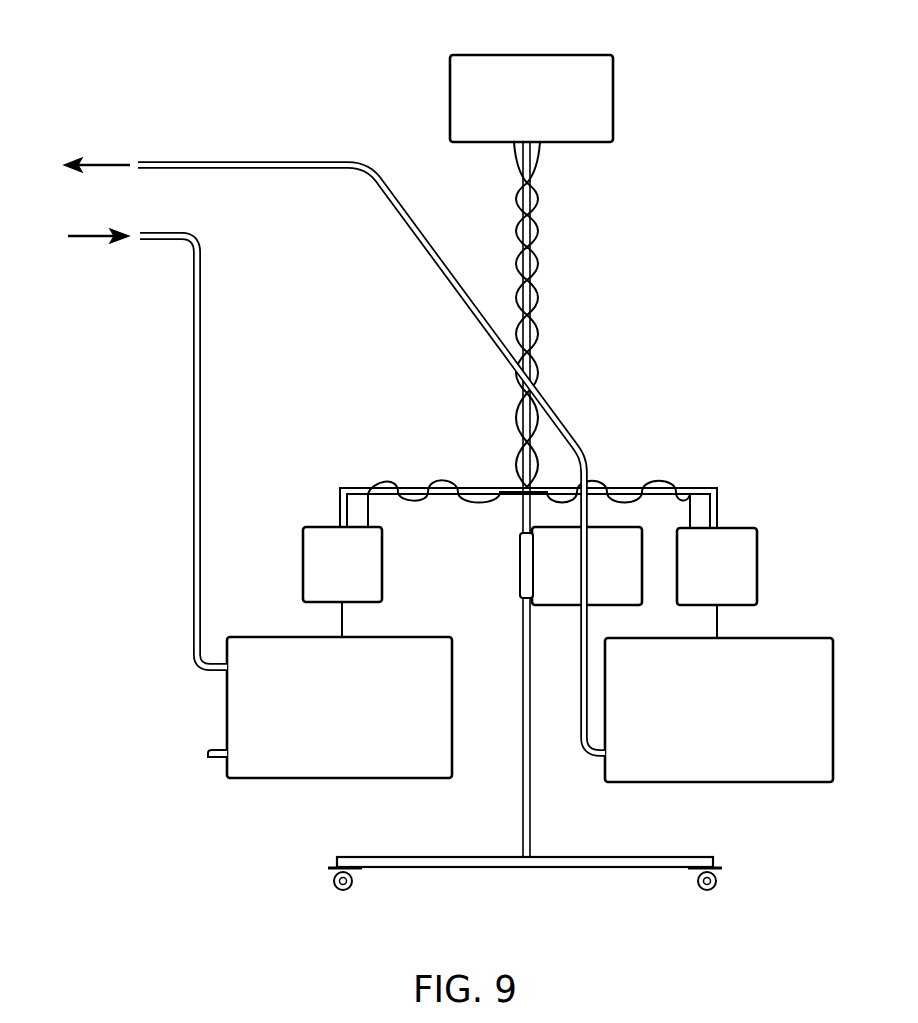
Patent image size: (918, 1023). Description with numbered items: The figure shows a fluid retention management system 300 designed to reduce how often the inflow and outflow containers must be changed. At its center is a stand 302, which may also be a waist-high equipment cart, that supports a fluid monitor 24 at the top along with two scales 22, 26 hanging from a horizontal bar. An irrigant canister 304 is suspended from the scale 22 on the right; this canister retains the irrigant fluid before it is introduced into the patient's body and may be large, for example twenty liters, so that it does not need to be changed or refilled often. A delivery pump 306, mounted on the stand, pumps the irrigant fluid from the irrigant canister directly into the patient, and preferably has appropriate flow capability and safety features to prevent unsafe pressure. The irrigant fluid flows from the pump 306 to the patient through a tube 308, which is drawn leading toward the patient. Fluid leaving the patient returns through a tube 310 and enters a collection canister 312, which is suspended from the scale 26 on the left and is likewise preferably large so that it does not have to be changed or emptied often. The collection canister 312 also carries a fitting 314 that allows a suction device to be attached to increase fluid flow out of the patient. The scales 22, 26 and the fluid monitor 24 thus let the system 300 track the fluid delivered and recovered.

The fluid retention management system 300 is at (778, 128).
The fluid monitor 24 is at (585, 55).
The tube 308 is at (286, 160).
The tube 310 is at (200, 331).
The scale 26 is at (318, 527).
The scale 22 is at (745, 528).
The delivery pump 306 is at (536, 560).
The stand 302 is at (531, 815).
The irrigant canister 304 is at (818, 638).
The collection canister 312 is at (227, 706).
The fitting 314 is at (210, 758).